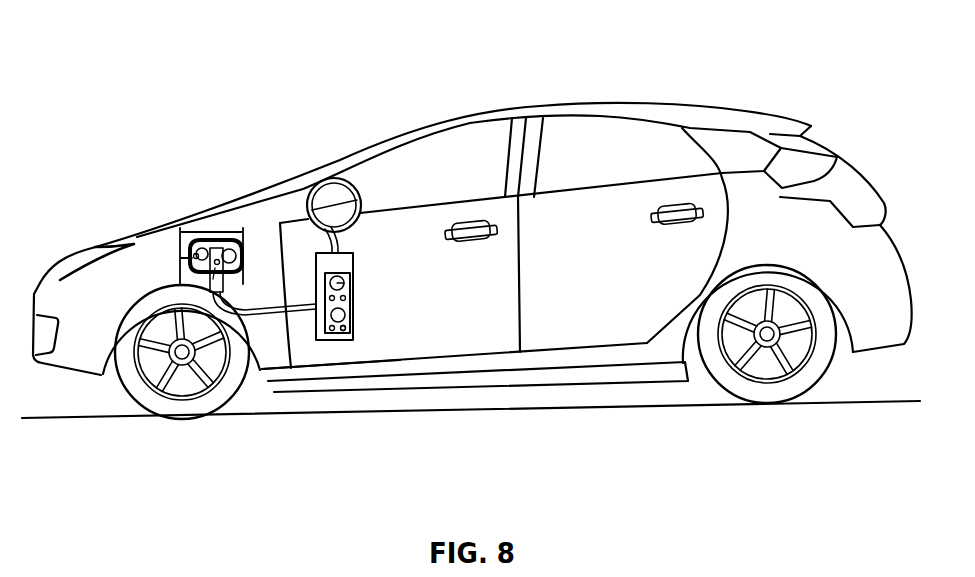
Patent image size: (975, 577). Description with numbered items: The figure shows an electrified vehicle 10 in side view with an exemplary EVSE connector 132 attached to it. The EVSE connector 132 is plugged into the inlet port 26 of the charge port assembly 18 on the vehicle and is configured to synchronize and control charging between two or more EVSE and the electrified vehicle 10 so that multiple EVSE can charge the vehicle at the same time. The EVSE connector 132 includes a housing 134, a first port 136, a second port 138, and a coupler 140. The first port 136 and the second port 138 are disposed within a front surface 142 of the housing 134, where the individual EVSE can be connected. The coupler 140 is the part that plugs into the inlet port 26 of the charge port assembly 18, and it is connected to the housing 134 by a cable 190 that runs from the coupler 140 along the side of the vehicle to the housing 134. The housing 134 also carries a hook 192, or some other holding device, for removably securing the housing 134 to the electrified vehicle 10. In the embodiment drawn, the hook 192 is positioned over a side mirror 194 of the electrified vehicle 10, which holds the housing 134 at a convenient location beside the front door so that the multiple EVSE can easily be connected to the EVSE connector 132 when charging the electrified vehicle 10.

The electrified vehicle 10 is at (588, 105).
The charge port assembly 18 is at (222, 236).
The inlet port 26 is at (179, 255).
The EVSE connector 132 is at (353, 312).
The housing 134 is at (350, 302).
The first port 136 is at (331, 333).
The second port 138 is at (344, 282).
The coupler 140 is at (195, 250).
The front surface 142 is at (342, 334).
The cable 190 is at (288, 345).
The hook 192 is at (334, 179).
The side mirror 194 is at (340, 197).